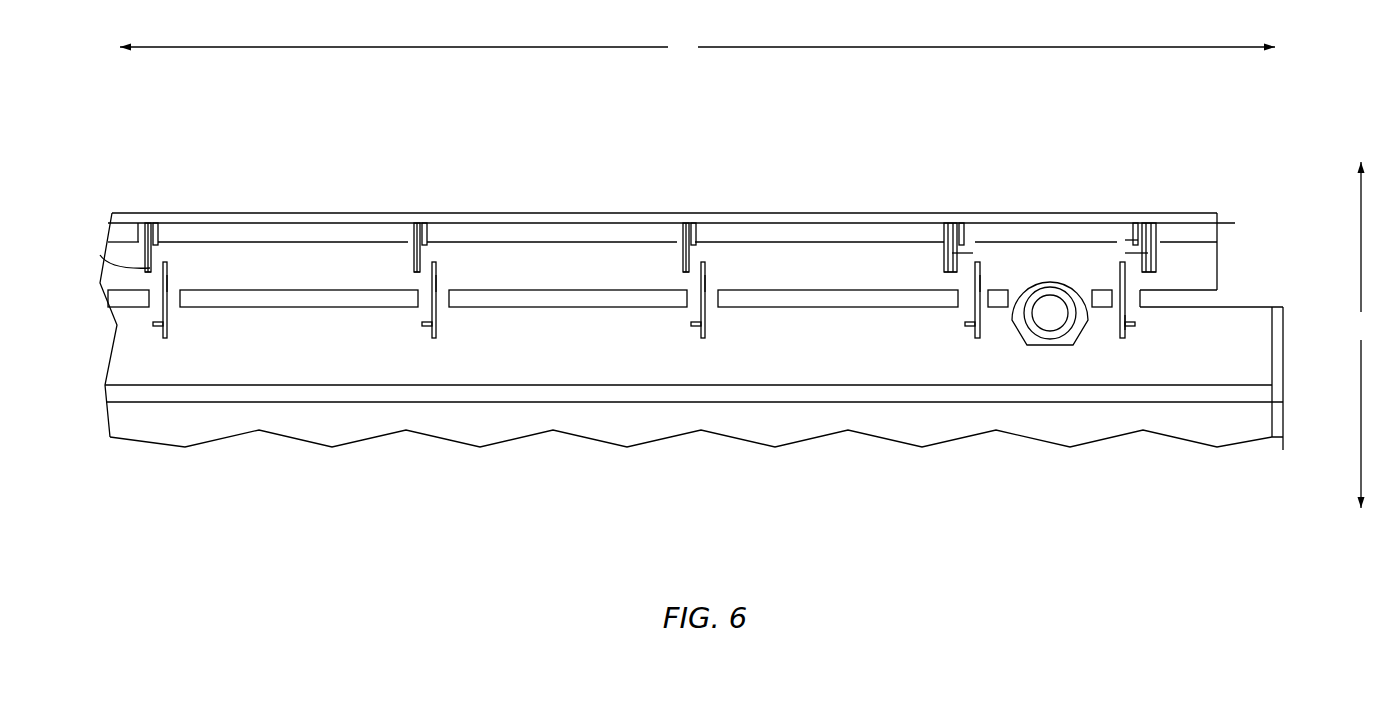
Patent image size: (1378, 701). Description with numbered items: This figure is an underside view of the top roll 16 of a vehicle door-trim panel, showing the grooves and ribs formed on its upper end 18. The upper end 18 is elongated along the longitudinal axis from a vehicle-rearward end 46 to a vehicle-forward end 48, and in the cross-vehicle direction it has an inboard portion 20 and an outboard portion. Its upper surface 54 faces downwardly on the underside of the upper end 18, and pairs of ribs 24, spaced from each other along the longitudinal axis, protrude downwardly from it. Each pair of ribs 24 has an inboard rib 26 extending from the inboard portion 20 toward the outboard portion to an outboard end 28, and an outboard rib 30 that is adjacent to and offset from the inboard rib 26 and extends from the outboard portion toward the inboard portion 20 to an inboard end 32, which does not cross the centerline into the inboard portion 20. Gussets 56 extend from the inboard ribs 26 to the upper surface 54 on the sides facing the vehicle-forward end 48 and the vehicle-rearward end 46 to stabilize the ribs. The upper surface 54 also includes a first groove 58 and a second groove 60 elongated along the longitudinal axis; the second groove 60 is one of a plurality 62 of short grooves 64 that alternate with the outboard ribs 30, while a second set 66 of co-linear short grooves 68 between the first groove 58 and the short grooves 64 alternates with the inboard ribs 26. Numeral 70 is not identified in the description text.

The top roll 16 is at (1247, 130).
The upper end 18 is at (688, 429).
The inboard portion 20 is at (405, 463).
The pairs of ribs 24 is at (166, 258).
The inboard rib 26 is at (170, 325).
The outboard end 28 is at (160, 240).
The outboard rib 30 is at (147, 262).
The inboard end 32 is at (118, 275).
The vehicle-rearward end 46 is at (120, 343).
The vehicle-forward end 48 is at (1278, 352).
The upper surface 54 is at (597, 350).
The gusset 56 is at (170, 282).
The first groove 58 is at (1060, 396).
The second groove 60 is at (833, 233).
The plurality of short grooves 62 is at (1196, 250).
The short grooves 64 is at (627, 212).
The second set of short grooves 66 is at (1210, 317).
The short grooves 68 is at (120, 298).
The corner block 70 is at (118, 212).